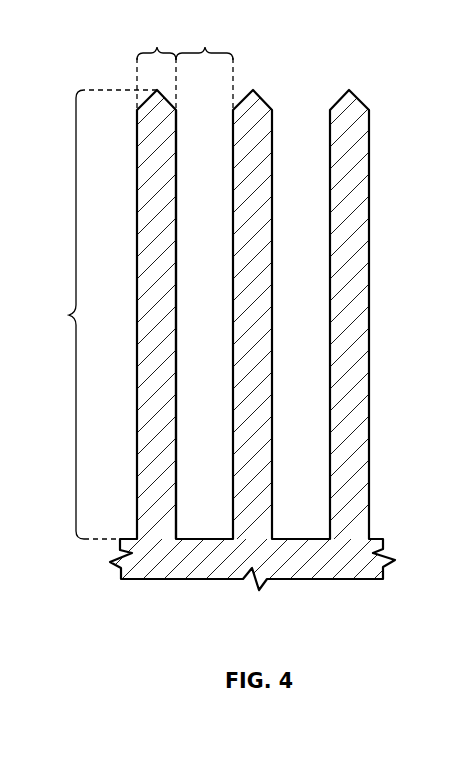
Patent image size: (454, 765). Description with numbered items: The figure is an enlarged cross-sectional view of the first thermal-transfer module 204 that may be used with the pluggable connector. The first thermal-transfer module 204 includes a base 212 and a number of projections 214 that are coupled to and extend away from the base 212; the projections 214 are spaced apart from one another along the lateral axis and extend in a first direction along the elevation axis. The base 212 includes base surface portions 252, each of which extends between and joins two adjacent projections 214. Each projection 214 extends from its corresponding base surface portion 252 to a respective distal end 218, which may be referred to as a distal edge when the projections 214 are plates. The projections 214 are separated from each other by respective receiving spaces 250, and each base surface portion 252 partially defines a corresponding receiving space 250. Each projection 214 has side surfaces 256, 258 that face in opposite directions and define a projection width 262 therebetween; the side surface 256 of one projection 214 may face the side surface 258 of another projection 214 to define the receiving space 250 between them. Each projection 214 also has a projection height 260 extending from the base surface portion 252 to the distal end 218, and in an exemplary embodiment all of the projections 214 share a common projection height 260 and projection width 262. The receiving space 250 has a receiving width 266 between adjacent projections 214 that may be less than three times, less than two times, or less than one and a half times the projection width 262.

The first thermal-transfer module 204 is at (361, 33).
The base 212 is at (348, 562).
The projections 214 is at (391, 164).
The distal ends 218 is at (265, 92).
The receiving spaces 250 is at (207, 115).
The base surface portions 252 is at (300, 536).
The side surface 256 is at (176, 237).
The side surface 258 is at (137, 300).
The projection height 260 is at (91, 314).
The projection width 262 is at (156, 41).
The receiving width 266 is at (204, 41).